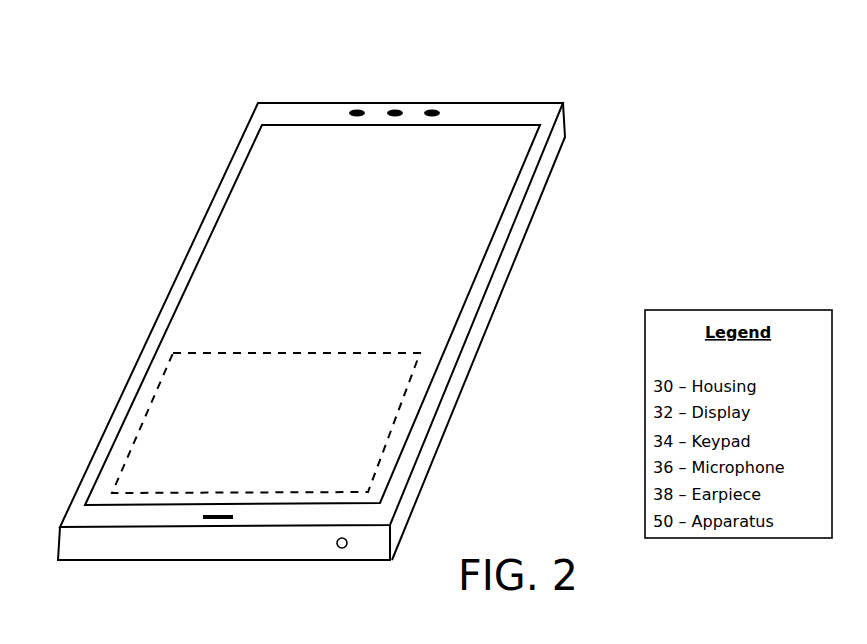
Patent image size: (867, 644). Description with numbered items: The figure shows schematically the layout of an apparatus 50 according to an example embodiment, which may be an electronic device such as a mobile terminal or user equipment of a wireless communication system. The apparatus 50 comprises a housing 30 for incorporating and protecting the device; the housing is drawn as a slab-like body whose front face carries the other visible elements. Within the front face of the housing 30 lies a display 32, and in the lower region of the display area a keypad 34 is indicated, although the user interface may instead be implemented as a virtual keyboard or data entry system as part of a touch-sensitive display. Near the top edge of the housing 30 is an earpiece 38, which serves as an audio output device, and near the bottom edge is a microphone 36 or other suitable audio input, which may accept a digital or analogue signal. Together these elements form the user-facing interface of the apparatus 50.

The housing 30 is at (278, 103).
The display 32 is at (455, 238).
The keypad 34 is at (373, 440).
The microphone 36 is at (225, 518).
The earpiece 38 is at (390, 103).
The apparatus 50 is at (592, 64).